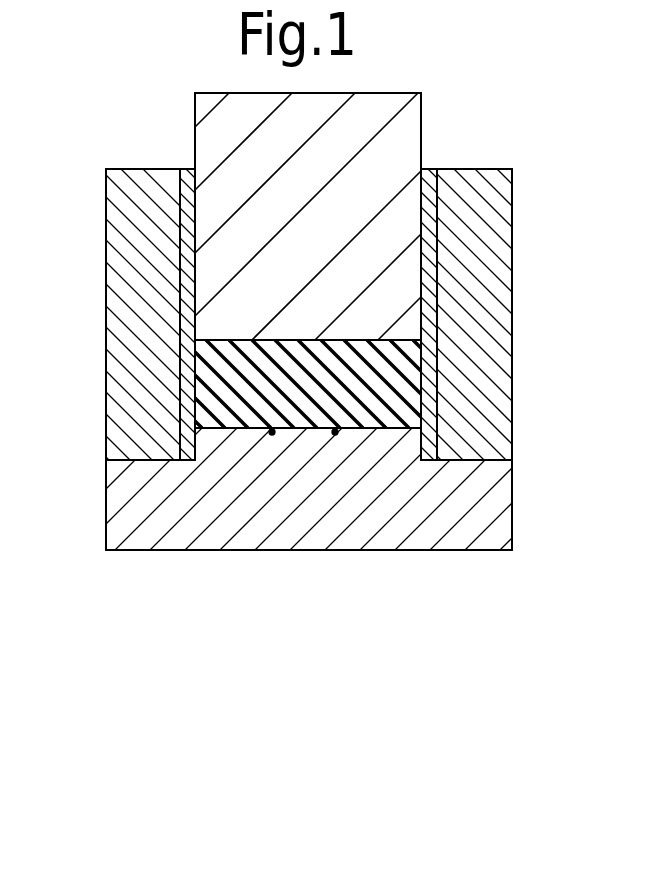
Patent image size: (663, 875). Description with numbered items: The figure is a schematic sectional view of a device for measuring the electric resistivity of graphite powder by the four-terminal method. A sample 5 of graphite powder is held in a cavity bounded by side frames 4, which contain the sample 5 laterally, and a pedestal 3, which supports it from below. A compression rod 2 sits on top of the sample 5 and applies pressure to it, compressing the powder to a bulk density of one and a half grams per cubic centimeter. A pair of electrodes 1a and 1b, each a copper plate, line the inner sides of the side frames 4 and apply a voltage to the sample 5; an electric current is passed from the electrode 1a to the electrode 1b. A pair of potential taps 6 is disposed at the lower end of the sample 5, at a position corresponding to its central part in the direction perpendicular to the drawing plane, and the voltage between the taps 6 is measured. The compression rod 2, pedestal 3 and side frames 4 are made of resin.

The electrode 1a is at (187, 230).
The electrode 1b is at (432, 210).
The compression rod 2 is at (402, 133).
The pedestal 3 is at (487, 500).
The side frame 4 is at (487, 310).
The sample 5 is at (393, 405).
The potential tap 6 is at (272, 433).